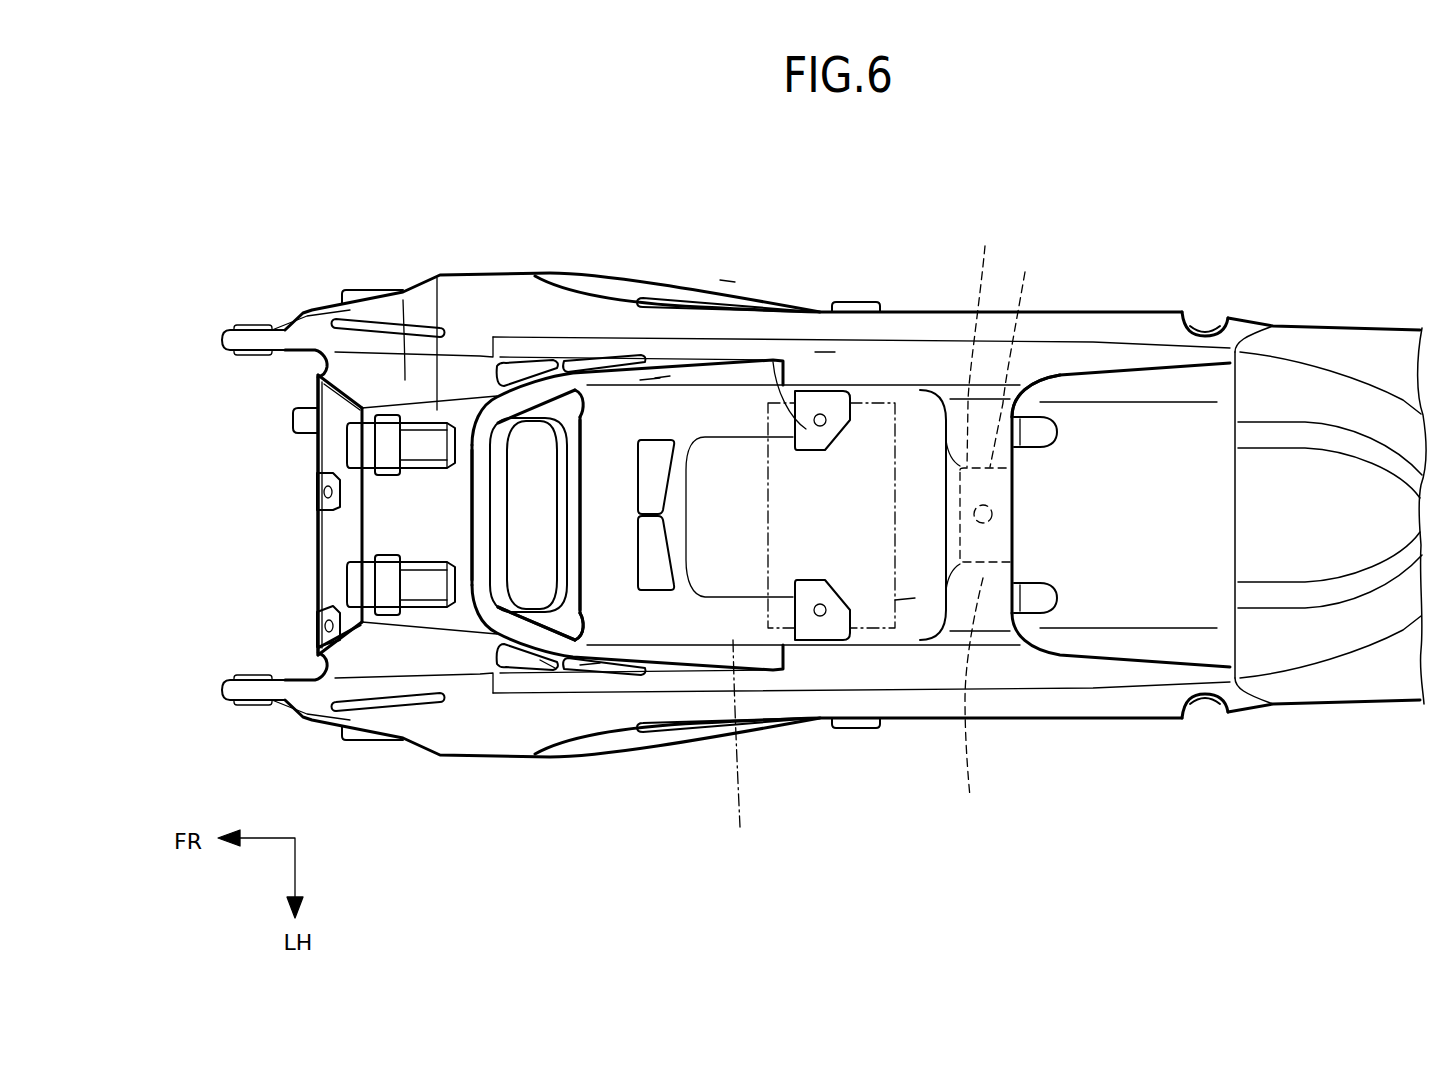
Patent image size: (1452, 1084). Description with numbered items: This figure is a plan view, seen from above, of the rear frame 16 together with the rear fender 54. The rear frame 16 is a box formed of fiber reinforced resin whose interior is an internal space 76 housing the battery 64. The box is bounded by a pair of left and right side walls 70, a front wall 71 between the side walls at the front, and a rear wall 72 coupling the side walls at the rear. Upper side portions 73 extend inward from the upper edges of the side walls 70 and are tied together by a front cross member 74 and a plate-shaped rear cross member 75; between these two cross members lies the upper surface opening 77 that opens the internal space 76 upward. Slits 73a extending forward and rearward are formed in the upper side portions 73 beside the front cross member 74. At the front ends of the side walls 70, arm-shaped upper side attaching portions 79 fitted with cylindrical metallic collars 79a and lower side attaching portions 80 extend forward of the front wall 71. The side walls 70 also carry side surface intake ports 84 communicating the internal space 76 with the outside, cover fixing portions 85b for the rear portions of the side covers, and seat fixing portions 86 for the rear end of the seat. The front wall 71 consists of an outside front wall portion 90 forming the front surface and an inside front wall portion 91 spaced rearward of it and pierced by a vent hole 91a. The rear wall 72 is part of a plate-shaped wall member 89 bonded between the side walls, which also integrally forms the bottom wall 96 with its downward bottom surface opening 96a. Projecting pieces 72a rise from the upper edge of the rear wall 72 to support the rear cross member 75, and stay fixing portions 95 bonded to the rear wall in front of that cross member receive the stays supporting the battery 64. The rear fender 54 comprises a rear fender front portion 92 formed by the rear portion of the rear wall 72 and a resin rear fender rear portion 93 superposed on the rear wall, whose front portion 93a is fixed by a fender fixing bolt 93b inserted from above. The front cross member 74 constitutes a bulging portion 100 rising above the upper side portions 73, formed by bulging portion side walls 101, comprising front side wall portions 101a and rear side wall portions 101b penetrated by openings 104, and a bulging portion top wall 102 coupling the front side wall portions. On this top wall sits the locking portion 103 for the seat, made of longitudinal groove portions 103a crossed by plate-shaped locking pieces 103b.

The rear frame 16 is at (733, 262).
The rear fender 54 is at (1344, 310).
The battery 64 is at (745, 751).
The side walls 70 is at (535, 310).
The front wall 71 is at (302, 528).
The rear wall 72 is at (900, 400).
The projecting pieces 72a is at (1040, 433).
The upper side portions 73 is at (824, 352).
The slits 73a is at (390, 320).
The front cross member 74 is at (440, 412).
The rear cross member 75 is at (853, 473).
The internal space 76 is at (641, 380).
The upper surface opening 77 is at (745, 403).
The upper side attaching portions 79 is at (228, 343).
The collars 79a is at (262, 325).
The lower side attaching portions 80 is at (345, 302).
The side surface intake ports 84 is at (700, 297).
The cover fixing portions 85b is at (857, 301).
The seat fixing portions 86 is at (1207, 331).
The wall member 89 is at (921, 611).
The outside front wall portion 90 is at (335, 550).
The inside front wall portion 91 is at (636, 409).
The vent hole 91a is at (530, 450).
The rear fender front portion 92 is at (966, 700).
The rear fender rear portion 93 is at (1383, 327).
The front portion 93a is at (985, 391).
The fender fixing bolt 93b is at (1018, 357).
The stay fixing portions 95 is at (773, 362).
The bottom wall 96 is at (599, 672).
The bottom surface opening 96a is at (660, 672).
The bulging portion 100 is at (347, 499).
The bulging portion side walls 101 is at (414, 380).
The front side wall portions 101a is at (445, 660).
The rear side wall portions 101b is at (658, 375).
The bulging portion top wall 102 is at (380, 528).
The locking portion 103 is at (346, 449).
The groove portions 103a is at (357, 455).
The locking pieces 103b is at (385, 432).
The openings 104 is at (645, 440).